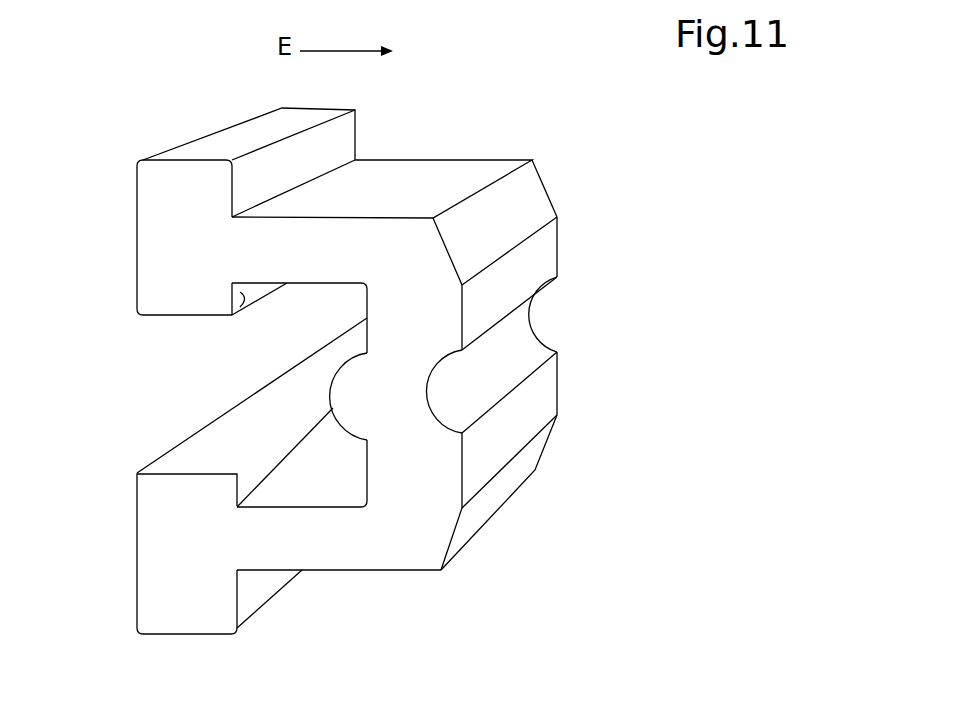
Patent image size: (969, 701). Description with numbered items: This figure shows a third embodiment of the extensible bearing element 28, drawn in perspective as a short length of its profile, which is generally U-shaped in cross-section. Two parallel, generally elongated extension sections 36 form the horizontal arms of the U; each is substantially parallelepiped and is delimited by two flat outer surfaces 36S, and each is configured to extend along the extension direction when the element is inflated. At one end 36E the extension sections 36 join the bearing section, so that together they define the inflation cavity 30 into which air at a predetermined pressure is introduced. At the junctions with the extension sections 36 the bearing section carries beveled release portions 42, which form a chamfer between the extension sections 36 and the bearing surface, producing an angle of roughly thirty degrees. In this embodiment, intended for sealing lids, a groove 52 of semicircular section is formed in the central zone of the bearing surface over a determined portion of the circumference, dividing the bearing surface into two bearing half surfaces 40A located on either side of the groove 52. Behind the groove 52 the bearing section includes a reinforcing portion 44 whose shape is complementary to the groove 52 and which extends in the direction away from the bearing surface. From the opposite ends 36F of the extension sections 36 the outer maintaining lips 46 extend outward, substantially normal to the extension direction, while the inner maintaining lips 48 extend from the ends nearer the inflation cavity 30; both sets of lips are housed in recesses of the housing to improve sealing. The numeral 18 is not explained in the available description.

The lower portion 18 is at (567, 531).
The extensible bearing element 28 is at (698, 342).
The inflation cavity 30 is at (325, 470).
The extension section 36 is at (402, 241).
The end of extension section 36E is at (343, 303).
The end of extension section 36F is at (358, 181).
The flat outer surface 36S is at (322, 283).
The bearing half surface 40A is at (532, 268).
The beveled release portion 42 is at (525, 209).
The reinforcing portion 44 is at (383, 417).
The outer maintaining lip 46 is at (222, 152).
The inner maintaining lip 48 is at (230, 317).
The groove 52 is at (495, 346).